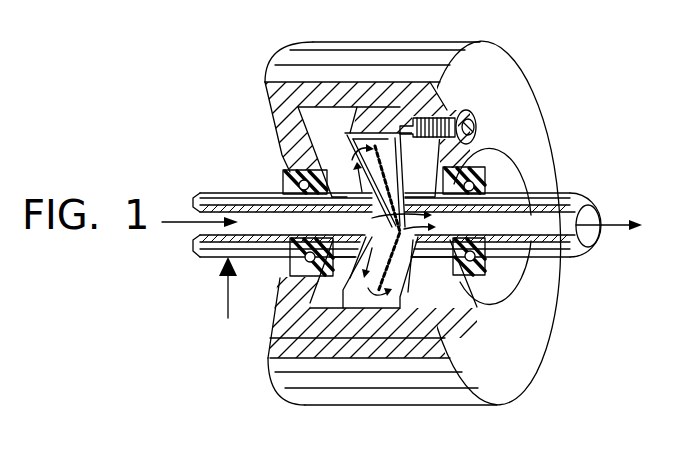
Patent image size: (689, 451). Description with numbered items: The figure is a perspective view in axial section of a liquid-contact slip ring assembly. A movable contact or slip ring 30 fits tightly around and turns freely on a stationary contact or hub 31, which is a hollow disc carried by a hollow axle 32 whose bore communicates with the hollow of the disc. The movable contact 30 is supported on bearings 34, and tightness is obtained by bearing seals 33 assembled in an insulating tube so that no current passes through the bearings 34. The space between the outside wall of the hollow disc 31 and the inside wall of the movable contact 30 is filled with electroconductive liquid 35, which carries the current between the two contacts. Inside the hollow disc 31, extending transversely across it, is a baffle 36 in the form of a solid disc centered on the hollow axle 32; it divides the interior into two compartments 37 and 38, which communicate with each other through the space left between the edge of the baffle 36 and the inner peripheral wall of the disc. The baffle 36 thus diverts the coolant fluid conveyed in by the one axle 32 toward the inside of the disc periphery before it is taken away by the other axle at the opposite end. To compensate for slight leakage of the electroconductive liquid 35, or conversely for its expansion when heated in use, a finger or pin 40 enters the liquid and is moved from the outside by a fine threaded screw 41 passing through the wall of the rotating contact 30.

The movable contact 30 is at (338, 90).
The stationary contact 31 is at (380, 125).
The hollow axle 32 is at (243, 192).
The bearing seals 33 is at (530, 150).
The bearings 34 is at (285, 170).
The electroconductive liquid 35 is at (327, 127).
The baffle 36 is at (400, 278).
The compartment 37 is at (405, 258).
The compartment 38 is at (275, 338).
The finger 40 is at (505, 64).
The fine threaded screw 41 is at (470, 128).